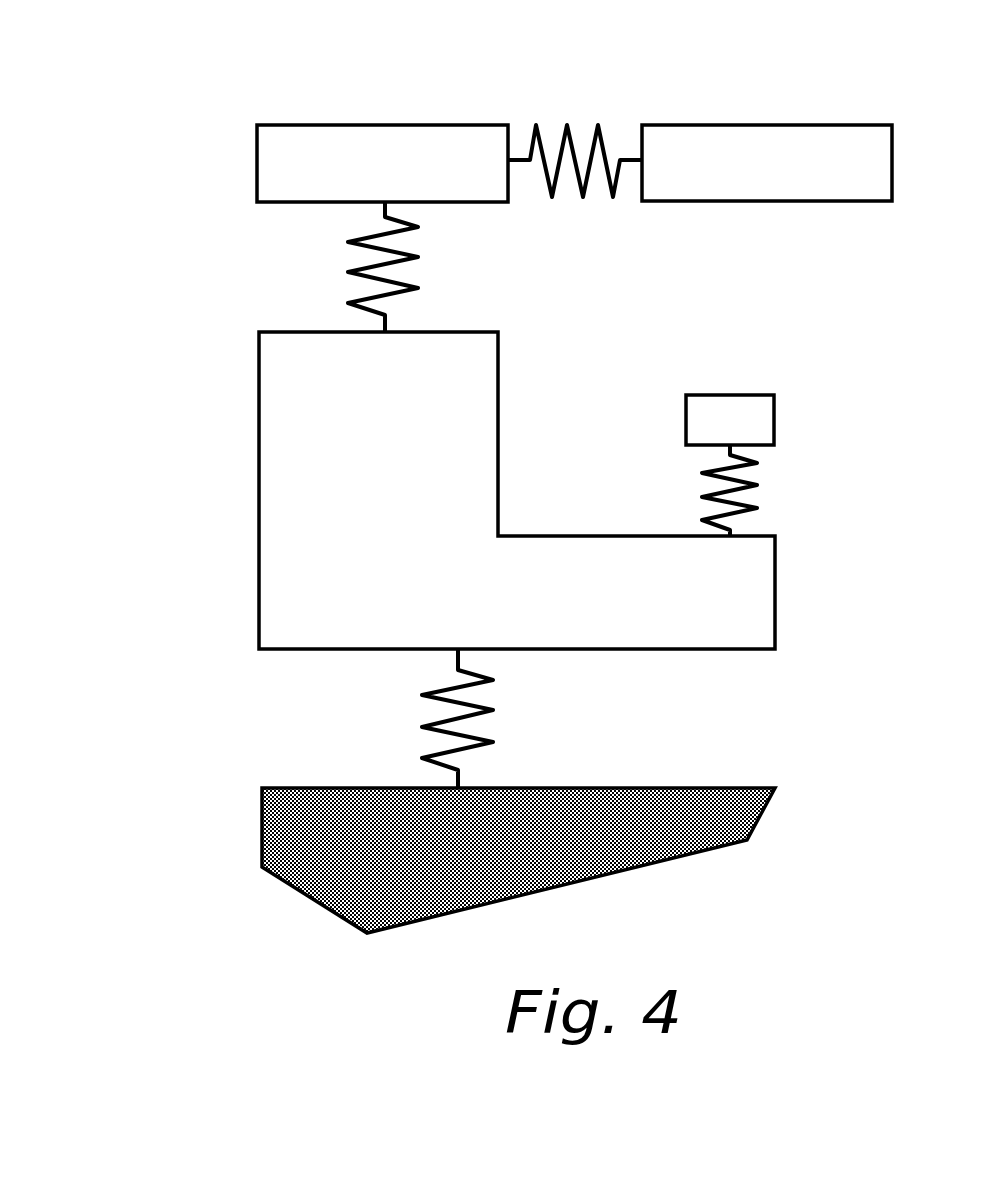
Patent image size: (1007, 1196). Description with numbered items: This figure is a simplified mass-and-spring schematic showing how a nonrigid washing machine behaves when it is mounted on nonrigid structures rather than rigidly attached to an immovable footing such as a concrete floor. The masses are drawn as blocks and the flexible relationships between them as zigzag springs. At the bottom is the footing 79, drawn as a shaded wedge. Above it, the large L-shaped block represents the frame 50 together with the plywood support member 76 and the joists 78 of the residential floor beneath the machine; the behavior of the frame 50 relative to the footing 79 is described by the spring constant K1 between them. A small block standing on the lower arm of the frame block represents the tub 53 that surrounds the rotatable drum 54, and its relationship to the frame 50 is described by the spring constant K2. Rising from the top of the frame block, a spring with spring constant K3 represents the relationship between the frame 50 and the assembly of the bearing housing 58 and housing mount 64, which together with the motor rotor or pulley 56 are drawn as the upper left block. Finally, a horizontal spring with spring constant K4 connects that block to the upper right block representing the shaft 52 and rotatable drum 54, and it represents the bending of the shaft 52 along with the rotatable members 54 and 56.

The frame 50 is at (411, 490).
The shaft 52 is at (767, 111).
The tub 53 is at (735, 395).
The rotatable drum 54 is at (760, 125).
The rotor or pulley 56 is at (365, 112).
The bearing housing 58 is at (365, 112).
The housing mount 64 is at (370, 125).
The plywood support member 76 is at (411, 490).
The joists 78 is at (258, 465).
The footing 79 is at (272, 788).
The spring constant K1 is at (493, 710).
The spring constant K2 is at (757, 485).
The spring constant K3 is at (418, 257).
The spring constant K4 is at (567, 125).